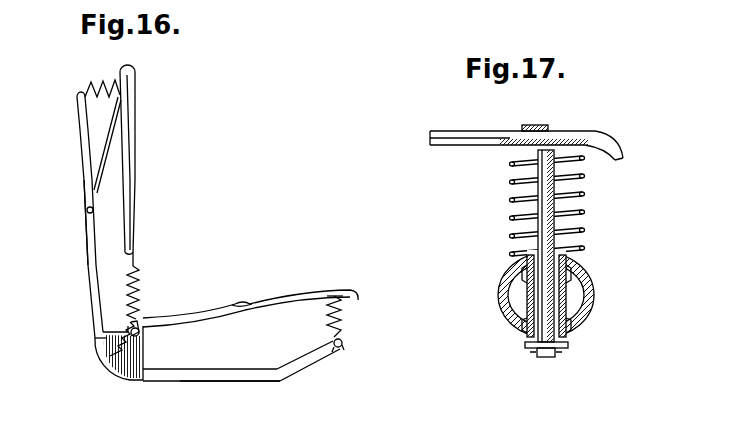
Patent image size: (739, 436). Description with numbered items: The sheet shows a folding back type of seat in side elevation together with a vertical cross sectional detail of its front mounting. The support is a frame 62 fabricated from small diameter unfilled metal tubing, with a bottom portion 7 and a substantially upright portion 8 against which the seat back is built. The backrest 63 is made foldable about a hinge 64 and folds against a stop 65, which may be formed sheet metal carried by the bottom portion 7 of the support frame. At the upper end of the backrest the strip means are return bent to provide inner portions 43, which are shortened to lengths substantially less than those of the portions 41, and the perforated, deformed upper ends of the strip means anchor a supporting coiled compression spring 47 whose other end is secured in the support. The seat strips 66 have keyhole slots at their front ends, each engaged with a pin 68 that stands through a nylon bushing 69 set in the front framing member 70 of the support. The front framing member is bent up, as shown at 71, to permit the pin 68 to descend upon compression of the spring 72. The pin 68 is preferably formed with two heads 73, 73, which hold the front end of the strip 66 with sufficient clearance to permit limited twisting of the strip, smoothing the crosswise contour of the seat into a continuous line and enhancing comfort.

In FIG. 16, the bottom portion of the support frame 7 is at (197, 384).
In FIG. 16, the upright portion of the support 8 is at (78, 143).
In FIG. 16, the portions of the strip means 41 is at (138, 150).
In FIG. 16, the inner portions 43 is at (118, 126).
In FIG. 16, the supporting coiled compression spring 47 is at (97, 81).
In FIG. 16, the frame 62 is at (245, 383).
In FIG. 16, the backrest 63 is at (86, 263).
In FIG. 16, the hinge 64 is at (138, 328).
In FIG. 16, the stop 65 is at (100, 345).
In FIG. 16, the strips 66 is at (244, 303).
In FIG. 17, the strips 66 is at (472, 127).
In FIG. 17, the pin 68 is at (542, 220).
In FIG. 17, the nylon bushing 69 is at (562, 290).
In FIG. 16, the front framing member 70 is at (360, 349).
In FIG. 17, the front framing member 70 is at (512, 328).
In FIG. 16, the bent up portion of the front framing member 71 is at (297, 358).
In FIG. 16, the spring 72 is at (345, 324).
In FIG. 17, the spring 72 is at (511, 172).
In FIG. 17, the heads of the pin 73 is at (560, 127).